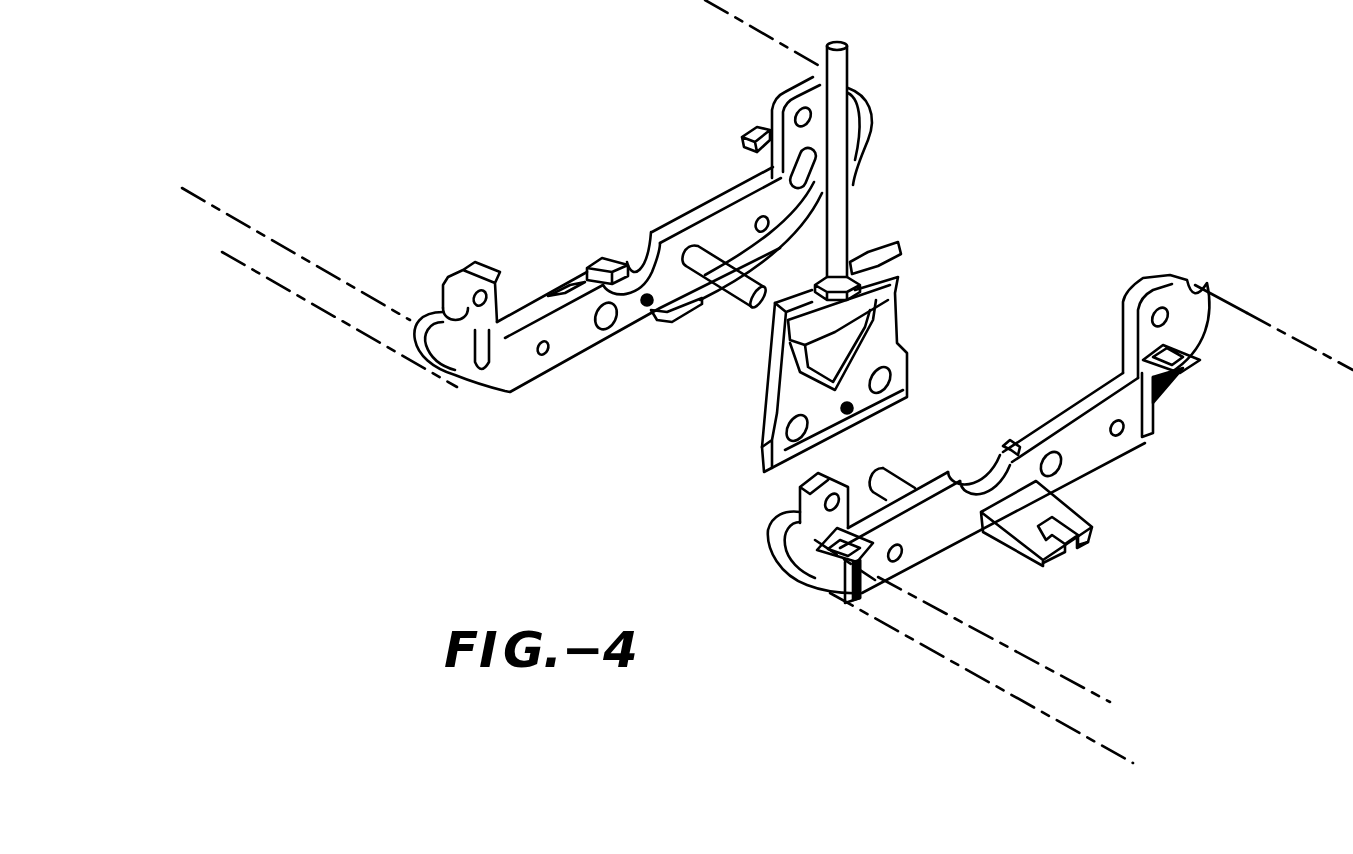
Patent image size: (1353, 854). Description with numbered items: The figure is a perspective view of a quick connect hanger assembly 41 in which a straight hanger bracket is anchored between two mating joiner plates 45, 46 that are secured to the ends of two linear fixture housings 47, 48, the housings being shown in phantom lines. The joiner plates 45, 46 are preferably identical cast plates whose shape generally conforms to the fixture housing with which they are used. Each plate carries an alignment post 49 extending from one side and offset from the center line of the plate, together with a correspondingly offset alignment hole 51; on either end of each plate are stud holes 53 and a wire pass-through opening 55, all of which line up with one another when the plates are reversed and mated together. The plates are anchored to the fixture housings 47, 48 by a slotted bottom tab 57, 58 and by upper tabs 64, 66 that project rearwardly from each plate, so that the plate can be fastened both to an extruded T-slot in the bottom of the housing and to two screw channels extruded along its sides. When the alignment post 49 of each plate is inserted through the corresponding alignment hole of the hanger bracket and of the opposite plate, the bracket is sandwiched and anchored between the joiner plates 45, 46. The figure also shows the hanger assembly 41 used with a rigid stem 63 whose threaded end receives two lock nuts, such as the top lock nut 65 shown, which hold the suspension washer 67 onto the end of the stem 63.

The hanger assembly 41 is at (921, 251).
The joiner plate 45 is at (504, 385).
The joiner plate 46 is at (803, 563).
The linear fixture housing 47 is at (332, 313).
The linear fixture housing 48 is at (928, 652).
The alignment post 49 is at (737, 300).
The alignment hole 51 is at (604, 330).
The stud holes 53 is at (543, 342).
The wire pass-through opening 55 is at (478, 360).
The slotted bottom tab 57 is at (617, 262).
The slotted bottom tab 58 is at (1085, 525).
The rigid stem 63 is at (838, 87).
The upper tab 64 is at (764, 132).
The top lock nut 65 is at (860, 264).
The upper tab 66 is at (1200, 363).
The suspension washer 67 is at (897, 292).